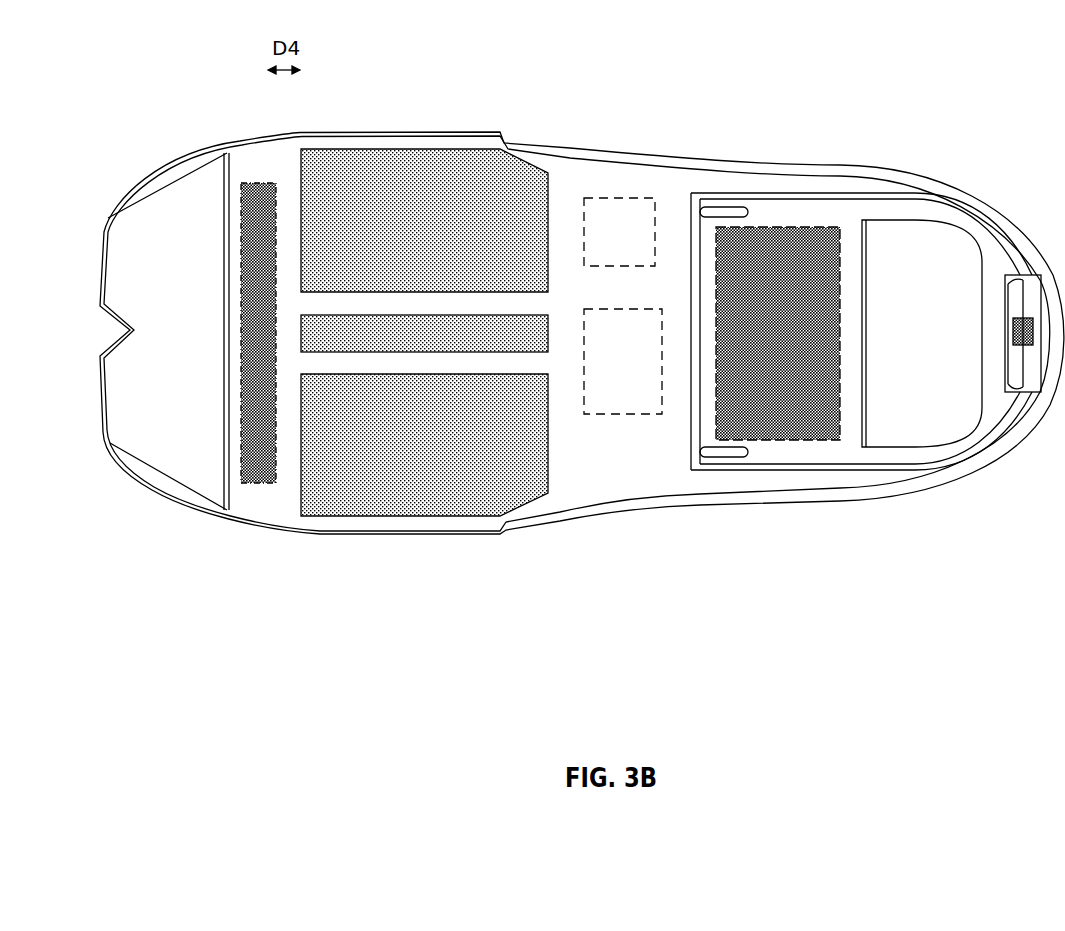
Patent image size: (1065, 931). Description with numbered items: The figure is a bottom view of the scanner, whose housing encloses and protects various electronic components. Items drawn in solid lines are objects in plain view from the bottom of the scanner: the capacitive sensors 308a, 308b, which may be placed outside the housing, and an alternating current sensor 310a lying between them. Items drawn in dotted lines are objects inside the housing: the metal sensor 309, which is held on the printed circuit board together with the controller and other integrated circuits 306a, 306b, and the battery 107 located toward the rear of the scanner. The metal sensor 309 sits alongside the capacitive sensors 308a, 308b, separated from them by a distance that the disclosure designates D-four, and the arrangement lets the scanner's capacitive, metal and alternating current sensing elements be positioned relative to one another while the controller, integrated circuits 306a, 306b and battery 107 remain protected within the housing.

The battery 107 is at (760, 227).
The controller and other integrated circuits 306a is at (602, 198).
The controller and other integrated circuits 306b is at (602, 414).
The capacitive sensor 308a is at (411, 145).
The capacitive sensor 308b is at (398, 518).
The metal sensor 309 is at (250, 483).
The alternating current (AC) sensor 310a is at (301, 348).